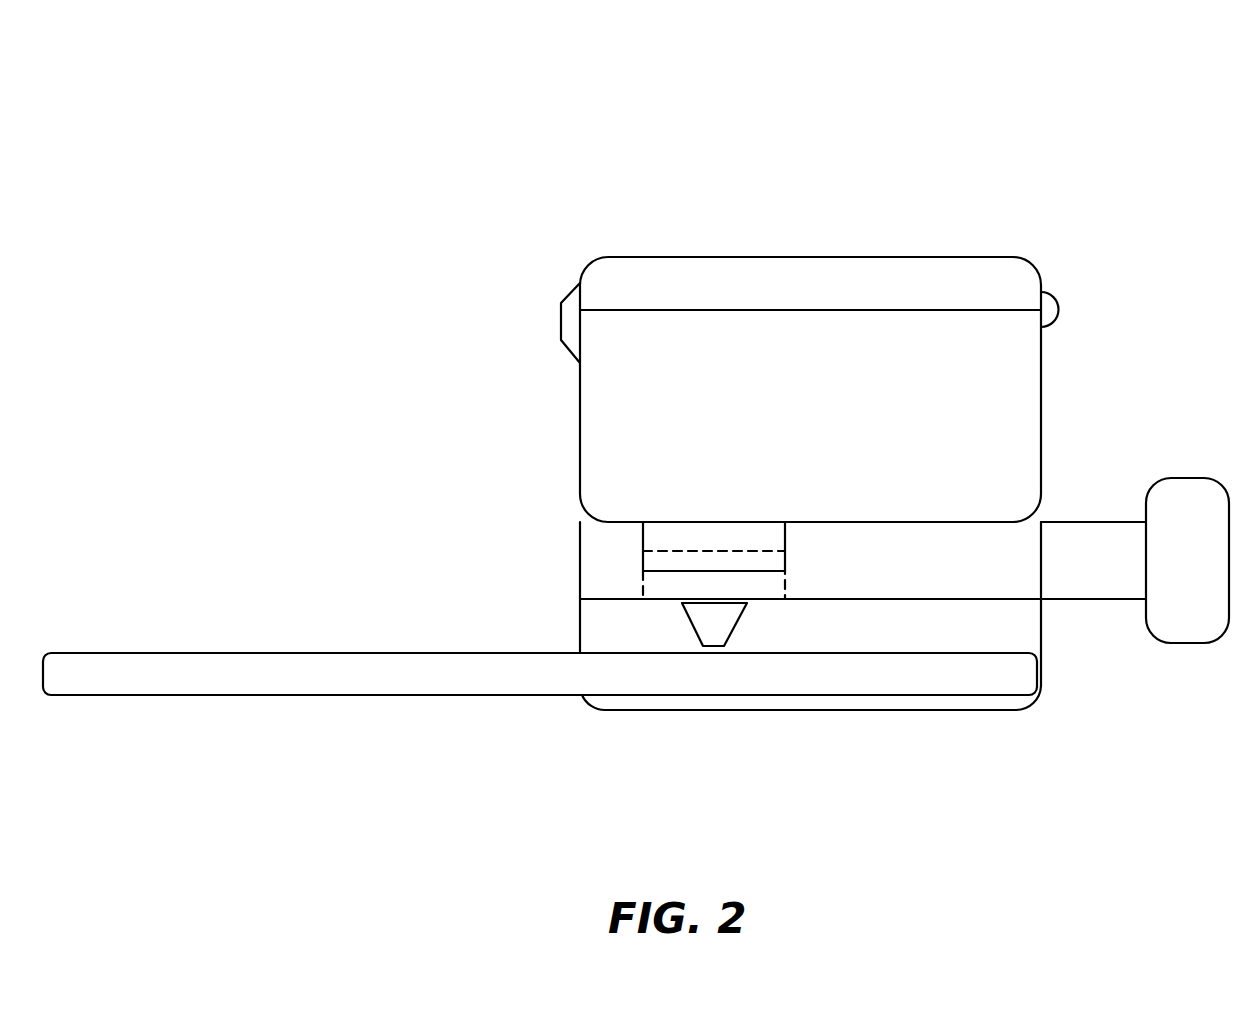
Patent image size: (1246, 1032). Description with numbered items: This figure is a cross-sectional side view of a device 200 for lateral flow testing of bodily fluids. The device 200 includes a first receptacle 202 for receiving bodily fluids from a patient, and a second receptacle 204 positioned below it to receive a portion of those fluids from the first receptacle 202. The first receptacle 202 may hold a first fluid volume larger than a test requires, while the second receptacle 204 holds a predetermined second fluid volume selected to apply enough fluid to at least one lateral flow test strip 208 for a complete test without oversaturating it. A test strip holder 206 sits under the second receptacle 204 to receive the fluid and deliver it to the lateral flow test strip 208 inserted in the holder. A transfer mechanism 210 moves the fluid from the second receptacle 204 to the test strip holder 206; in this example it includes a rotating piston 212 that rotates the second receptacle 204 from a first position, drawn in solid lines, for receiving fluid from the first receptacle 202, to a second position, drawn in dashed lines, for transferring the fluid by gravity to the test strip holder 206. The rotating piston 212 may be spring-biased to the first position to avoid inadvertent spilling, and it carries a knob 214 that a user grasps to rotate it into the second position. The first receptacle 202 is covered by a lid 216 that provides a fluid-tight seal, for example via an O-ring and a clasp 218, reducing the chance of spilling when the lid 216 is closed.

The device 200 is at (392, 88).
The first receptacle 202 is at (580, 402).
The second receptacle 204 is at (643, 547).
The test strip holder 206 is at (780, 711).
The lateral flow test strip 208 is at (326, 696).
The transfer mechanism 210 is at (555, 576).
The rotating piston 212 is at (1068, 601).
The knob 214 is at (1187, 478).
The lid 216 is at (794, 257).
The clasp 218 is at (560, 323).